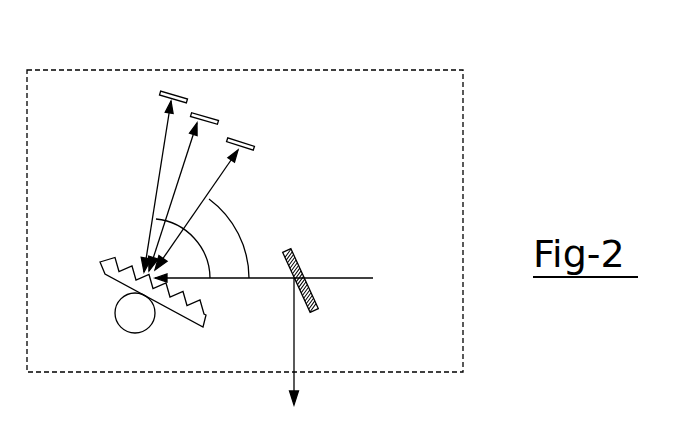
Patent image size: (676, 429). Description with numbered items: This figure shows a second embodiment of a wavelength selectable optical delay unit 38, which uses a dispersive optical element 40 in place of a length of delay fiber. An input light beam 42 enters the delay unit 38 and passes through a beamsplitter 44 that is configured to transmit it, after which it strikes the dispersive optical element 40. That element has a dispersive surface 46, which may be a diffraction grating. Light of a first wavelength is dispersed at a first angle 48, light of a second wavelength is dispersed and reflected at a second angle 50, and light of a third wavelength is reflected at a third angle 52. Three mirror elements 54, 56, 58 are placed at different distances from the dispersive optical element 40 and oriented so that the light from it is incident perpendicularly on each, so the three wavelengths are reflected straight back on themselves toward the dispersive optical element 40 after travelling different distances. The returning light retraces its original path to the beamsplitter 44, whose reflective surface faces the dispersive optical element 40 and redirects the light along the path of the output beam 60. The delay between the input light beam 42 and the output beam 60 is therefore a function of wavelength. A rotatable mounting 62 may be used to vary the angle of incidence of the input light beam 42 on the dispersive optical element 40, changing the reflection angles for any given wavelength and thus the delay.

The wavelength selectable optical delay unit 38 is at (373, 44).
The dispersive optical element 40 is at (107, 278).
The input light beam 42 is at (352, 279).
The beamsplitter 44 is at (301, 261).
The dispersive surface 46 is at (202, 299).
The first angle 48 is at (155, 229).
The second angle 50 is at (246, 236).
The third angle 52 is at (208, 202).
The mirror element 54 is at (160, 94).
The mirror element 56 is at (214, 116).
The mirror element 58 is at (255, 145).
The output beam 60 is at (296, 326).
The rotatable mounting 62 is at (115, 313).